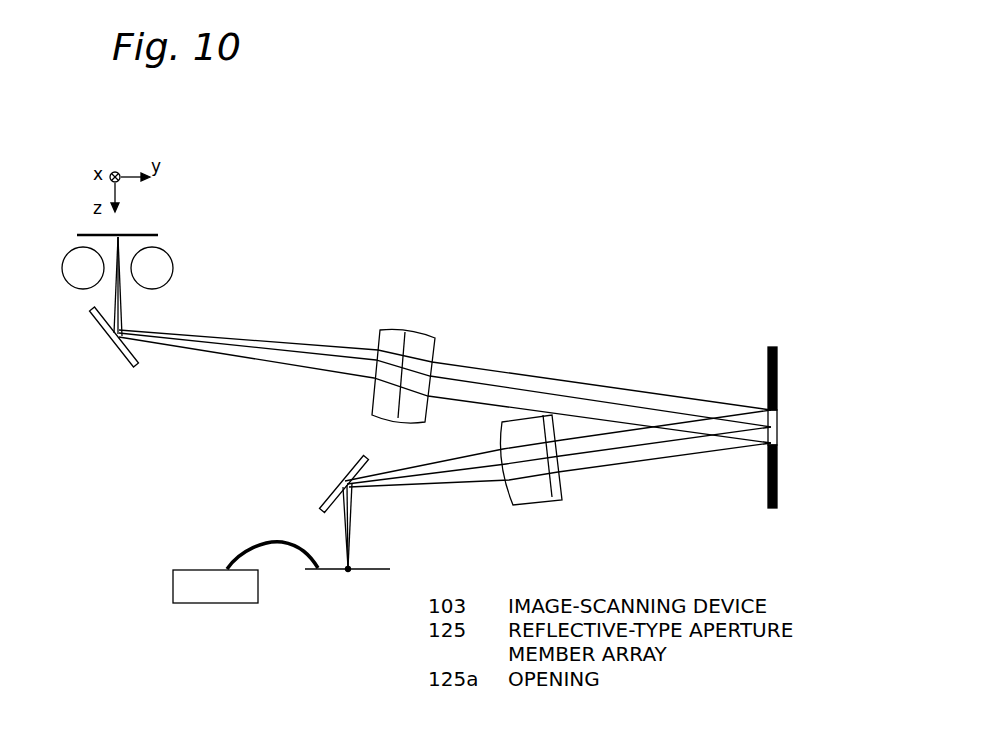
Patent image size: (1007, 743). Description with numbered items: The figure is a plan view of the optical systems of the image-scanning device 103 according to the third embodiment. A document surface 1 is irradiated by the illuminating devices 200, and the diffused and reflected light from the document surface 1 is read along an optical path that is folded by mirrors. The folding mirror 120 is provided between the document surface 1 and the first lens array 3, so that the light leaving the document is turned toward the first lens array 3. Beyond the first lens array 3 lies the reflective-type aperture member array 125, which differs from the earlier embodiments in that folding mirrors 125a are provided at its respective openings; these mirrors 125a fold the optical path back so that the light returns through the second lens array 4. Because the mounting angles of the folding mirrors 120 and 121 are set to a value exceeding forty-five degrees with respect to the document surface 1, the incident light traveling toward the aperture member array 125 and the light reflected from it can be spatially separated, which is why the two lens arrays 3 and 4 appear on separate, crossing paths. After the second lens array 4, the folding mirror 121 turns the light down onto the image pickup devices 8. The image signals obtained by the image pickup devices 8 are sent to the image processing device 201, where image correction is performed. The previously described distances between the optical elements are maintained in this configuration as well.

The document surface 1 is at (147, 233).
The illuminating device 200 is at (170, 253).
The folding mirror 120 is at (93, 316).
The first lens array 3 is at (418, 333).
The reflective-type aperture member array 125 is at (777, 357).
The folding mirror 125a is at (777, 418).
The second lens array 4 is at (562, 493).
The folding mirror 121 is at (342, 483).
The image pickup device 8 is at (320, 571).
The image processing device 201 is at (190, 583).
The image-scanning device 103 is at (635, 304).